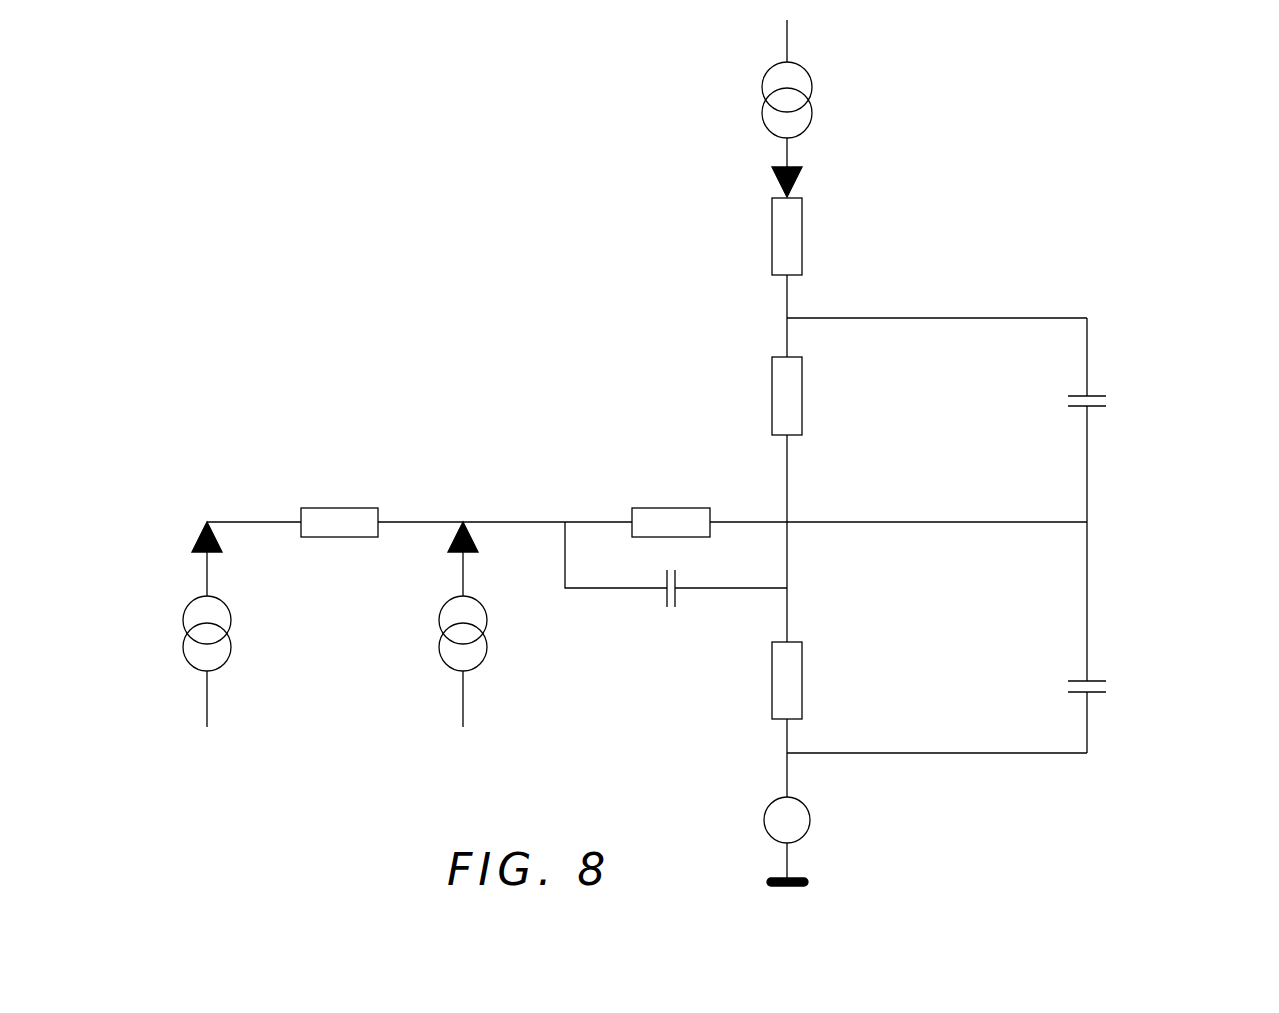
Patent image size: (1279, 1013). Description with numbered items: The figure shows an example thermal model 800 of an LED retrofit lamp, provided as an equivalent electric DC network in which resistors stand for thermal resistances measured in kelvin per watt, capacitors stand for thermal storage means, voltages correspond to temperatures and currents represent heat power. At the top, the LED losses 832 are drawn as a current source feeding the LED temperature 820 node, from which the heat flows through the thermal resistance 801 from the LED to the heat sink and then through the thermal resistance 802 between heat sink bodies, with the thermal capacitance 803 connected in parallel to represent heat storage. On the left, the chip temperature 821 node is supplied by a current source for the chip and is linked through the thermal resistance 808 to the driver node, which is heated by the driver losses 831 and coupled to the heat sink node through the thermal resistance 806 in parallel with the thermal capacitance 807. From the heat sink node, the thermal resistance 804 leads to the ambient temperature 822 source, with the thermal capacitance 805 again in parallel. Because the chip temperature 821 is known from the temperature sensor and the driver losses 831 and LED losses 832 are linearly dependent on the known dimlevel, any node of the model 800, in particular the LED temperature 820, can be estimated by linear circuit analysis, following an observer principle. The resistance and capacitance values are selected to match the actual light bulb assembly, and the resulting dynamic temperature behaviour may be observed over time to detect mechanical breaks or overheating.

The thermal model 800 is at (368, 290).
The thermal resistance 801 is at (770, 240).
The thermal resistance 802 is at (770, 398).
The thermal capacitance 803 is at (1105, 402).
The thermal resistance 804 is at (770, 683).
The thermal capacitance 805 is at (1105, 687).
The thermal resistance 806 is at (632, 512).
The thermal capacitance 807 is at (662, 596).
The thermal resistance 808 is at (300, 512).
The LED temperature 820 is at (788, 46).
The chip temperature 821 is at (185, 518).
The ambient temperature 822 is at (762, 820).
The driver losses 831 is at (437, 660).
The LED losses 832 is at (750, 101).